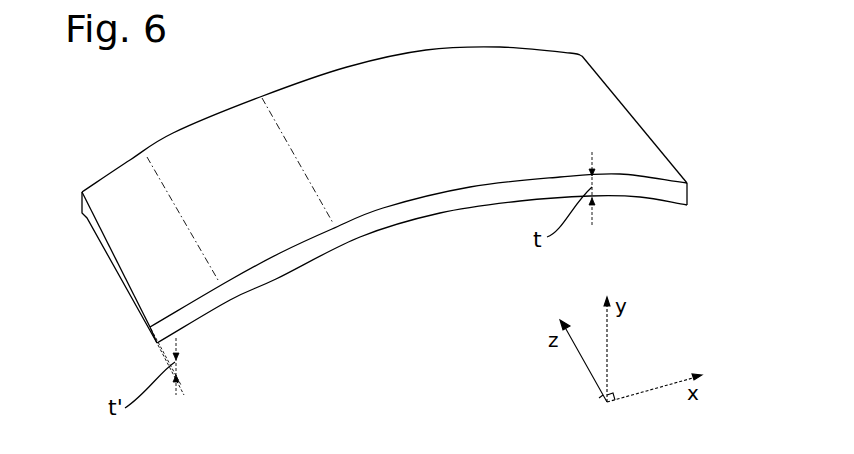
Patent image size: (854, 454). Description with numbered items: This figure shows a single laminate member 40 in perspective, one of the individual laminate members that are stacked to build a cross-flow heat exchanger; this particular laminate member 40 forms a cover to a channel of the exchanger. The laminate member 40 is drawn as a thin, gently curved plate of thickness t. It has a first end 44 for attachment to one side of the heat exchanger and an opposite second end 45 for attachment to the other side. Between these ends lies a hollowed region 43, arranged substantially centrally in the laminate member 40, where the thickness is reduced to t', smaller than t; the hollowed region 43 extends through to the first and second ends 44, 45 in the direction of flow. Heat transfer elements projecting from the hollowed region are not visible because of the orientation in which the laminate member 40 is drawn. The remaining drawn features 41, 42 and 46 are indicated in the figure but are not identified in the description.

The laminate member 40 is at (678, 193).
The front side surface 41 is at (333, 240).
The top surface 42 is at (432, 50).
The hollowed region 43 is at (115, 275).
The first end 44 is at (627, 107).
The second end 45 is at (91, 226).
The lower left corner edge 46 is at (153, 340).